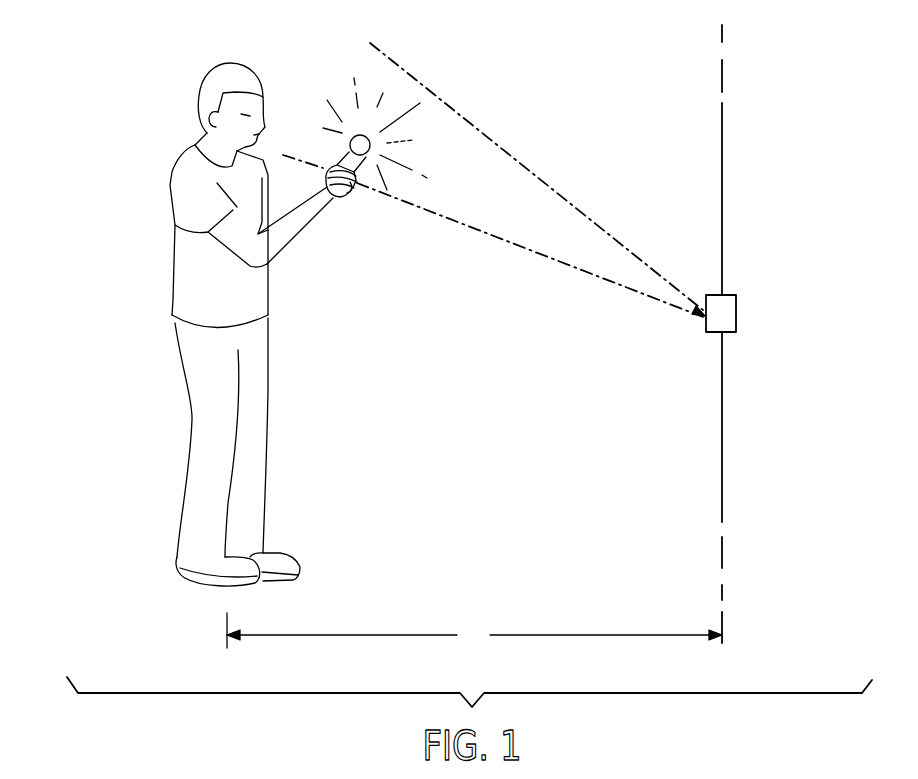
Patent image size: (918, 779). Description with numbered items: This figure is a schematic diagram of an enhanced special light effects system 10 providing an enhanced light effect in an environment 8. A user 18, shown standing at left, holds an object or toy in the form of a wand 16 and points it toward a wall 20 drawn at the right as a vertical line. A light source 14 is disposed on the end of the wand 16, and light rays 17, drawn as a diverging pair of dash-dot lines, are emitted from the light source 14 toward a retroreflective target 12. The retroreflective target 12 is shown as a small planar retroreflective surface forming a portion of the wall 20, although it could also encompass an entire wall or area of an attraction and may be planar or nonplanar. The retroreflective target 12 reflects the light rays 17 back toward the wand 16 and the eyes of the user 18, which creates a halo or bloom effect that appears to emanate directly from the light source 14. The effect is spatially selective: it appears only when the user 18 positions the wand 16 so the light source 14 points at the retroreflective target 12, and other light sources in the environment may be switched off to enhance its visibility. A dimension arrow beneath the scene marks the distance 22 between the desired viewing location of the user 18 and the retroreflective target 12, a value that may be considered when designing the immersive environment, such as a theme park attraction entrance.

The environment 8 is at (67, 247).
The enhanced special light effects system 10 is at (591, 55).
The retroreflective target 12 is at (736, 317).
The light source 14 is at (353, 133).
The wand 16 is at (357, 165).
The light rays 17 is at (492, 167).
The user 18 is at (150, 145).
The wall 20 is at (722, 183).
The distance 22 is at (478, 618).